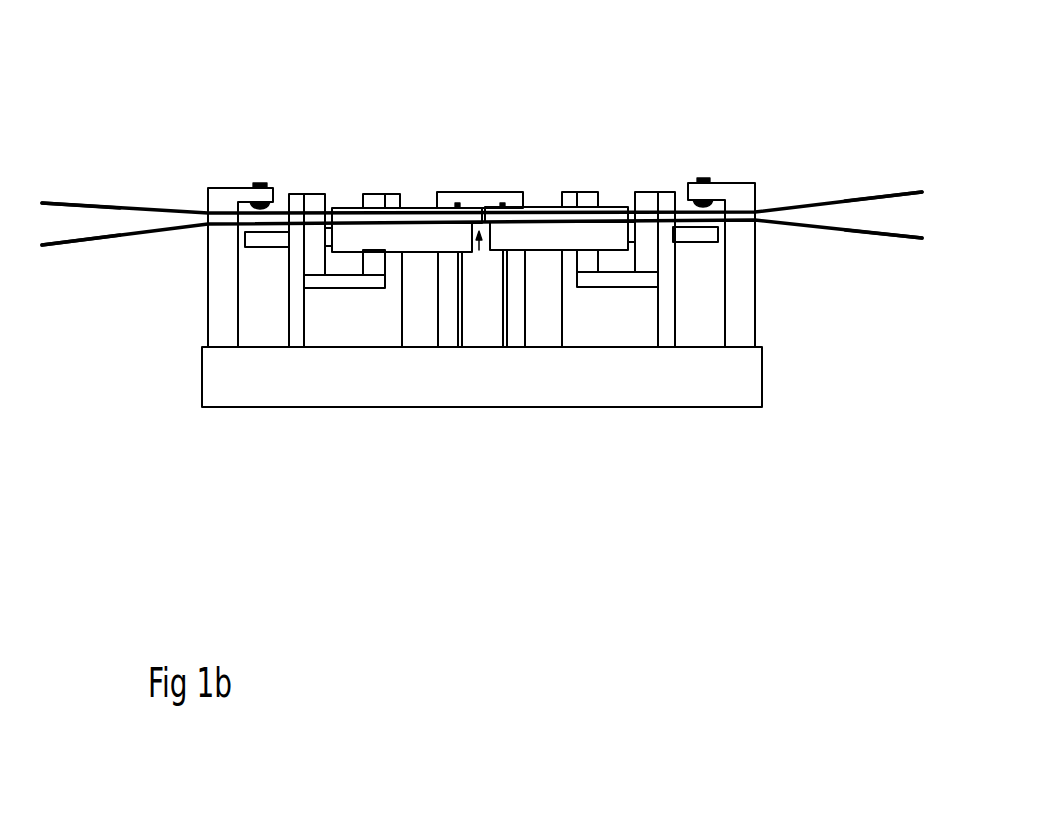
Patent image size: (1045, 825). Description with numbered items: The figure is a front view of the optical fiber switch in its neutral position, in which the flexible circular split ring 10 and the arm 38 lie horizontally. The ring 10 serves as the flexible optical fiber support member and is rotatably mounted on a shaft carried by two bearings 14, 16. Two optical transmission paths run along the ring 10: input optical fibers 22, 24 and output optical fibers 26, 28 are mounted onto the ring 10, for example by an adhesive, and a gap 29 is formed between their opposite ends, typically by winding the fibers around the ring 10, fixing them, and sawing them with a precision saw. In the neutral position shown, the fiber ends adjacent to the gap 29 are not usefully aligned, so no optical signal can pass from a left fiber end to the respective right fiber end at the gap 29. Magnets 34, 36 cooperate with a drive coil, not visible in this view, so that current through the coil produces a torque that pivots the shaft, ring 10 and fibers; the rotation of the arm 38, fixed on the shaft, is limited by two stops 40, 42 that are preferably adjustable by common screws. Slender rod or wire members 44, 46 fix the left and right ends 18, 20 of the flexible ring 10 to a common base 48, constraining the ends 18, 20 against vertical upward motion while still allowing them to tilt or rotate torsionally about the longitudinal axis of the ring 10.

The circular split ring 10 is at (482, 281).
The bearing 14 is at (470, 192).
The bearing 16 is at (482, 218).
The left end of the flexible element 18 is at (462, 233).
The right end of the flexible element 20 is at (502, 233).
The input optical fiber 22 is at (118, 228).
The input optical fiber 24 is at (113, 205).
The output optical fiber 26 is at (845, 196).
The output optical fiber 28 is at (840, 234).
The gap 29 is at (478, 252).
The magnet 34 is at (313, 193).
The magnet 36 is at (589, 192).
The arm 38 is at (262, 247).
The stop 40 is at (258, 184).
The stop 42 is at (703, 182).
The member 44 is at (458, 300).
The member 46 is at (512, 300).
The common base 48 is at (712, 404).